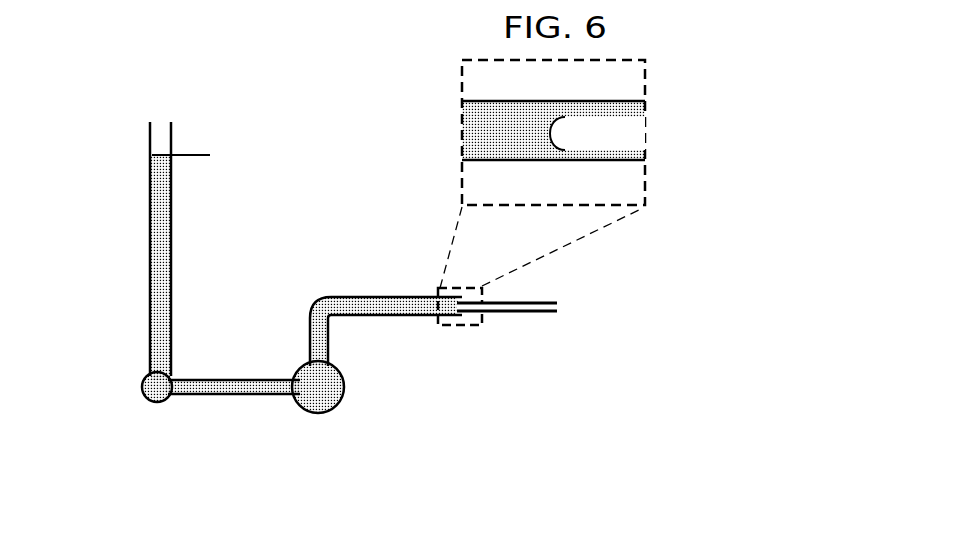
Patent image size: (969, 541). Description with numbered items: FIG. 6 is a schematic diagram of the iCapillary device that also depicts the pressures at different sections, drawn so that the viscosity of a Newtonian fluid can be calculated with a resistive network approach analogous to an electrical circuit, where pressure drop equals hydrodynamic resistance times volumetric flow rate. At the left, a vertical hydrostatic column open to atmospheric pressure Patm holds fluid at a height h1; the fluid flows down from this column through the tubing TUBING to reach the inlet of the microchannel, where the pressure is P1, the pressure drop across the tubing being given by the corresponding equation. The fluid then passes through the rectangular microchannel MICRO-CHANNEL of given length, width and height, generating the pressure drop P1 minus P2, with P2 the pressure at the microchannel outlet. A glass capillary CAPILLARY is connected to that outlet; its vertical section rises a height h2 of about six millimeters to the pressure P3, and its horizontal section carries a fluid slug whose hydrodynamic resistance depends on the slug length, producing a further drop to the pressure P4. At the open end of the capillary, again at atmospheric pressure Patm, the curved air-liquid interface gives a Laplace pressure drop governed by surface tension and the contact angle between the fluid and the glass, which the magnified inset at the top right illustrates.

The tubing TUBING is at (150, 258).
The microchannel MICRO-CHANNEL is at (218, 378).
The glass capillary CAPILLARY is at (518, 318).
The pressure at microchannel inlet P1 is at (144, 387).
The pressure at microchannel outlet P2 is at (332, 387).
The pressure at top of vertical capillary section P3 is at (323, 280).
The pressure at horizontal capillary section P4 is at (460, 324).
The atmospheric pressure Patm is at (354, 222).
The hydrostatic column height h1 is at (197, 157).
The vertical height of glass capillary h2 is at (315, 298).